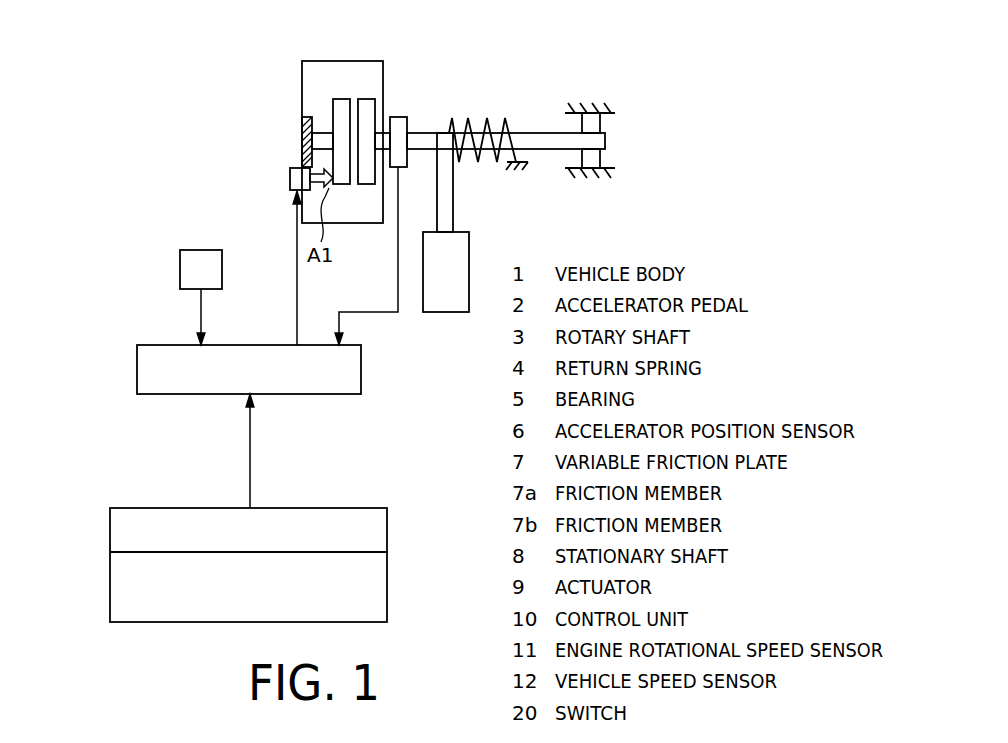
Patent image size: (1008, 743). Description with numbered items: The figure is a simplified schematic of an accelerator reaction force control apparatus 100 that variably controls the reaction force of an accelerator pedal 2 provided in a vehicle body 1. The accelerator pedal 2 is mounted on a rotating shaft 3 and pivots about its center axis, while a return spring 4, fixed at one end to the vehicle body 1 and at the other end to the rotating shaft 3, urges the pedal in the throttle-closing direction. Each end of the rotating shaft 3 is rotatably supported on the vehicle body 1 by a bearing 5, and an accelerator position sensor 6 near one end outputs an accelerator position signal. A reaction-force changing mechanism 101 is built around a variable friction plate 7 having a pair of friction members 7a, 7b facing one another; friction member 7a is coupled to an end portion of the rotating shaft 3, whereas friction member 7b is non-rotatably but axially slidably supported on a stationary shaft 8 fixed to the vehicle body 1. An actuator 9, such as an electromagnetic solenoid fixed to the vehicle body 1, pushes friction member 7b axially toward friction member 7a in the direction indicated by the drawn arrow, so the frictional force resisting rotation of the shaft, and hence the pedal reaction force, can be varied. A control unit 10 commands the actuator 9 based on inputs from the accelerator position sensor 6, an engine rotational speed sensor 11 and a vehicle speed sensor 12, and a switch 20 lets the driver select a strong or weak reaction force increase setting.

The vehicle body 1 is at (302, 140).
The accelerator pedal 2 is at (472, 222).
The rotating shaft 3 is at (535, 133).
The return spring 4 is at (470, 118).
The bearing 5 is at (600, 156).
The accelerator position sensor 6 is at (398, 117).
The variable friction plate 7 is at (363, 228).
The friction member 7a is at (368, 99).
The friction member 7b is at (341, 99).
The stationary shaft 8 is at (322, 141).
The actuator 9 is at (290, 180).
The control unit 10 is at (361, 370).
The engine rotational speed sensor 11 is at (110, 580).
The vehicle speed sensor 12 is at (110, 528).
The switch 20 is at (201, 297).
The accelerator reaction force control apparatus 100 is at (134, 132).
The reaction-force changing mechanism 101 is at (449, 68).